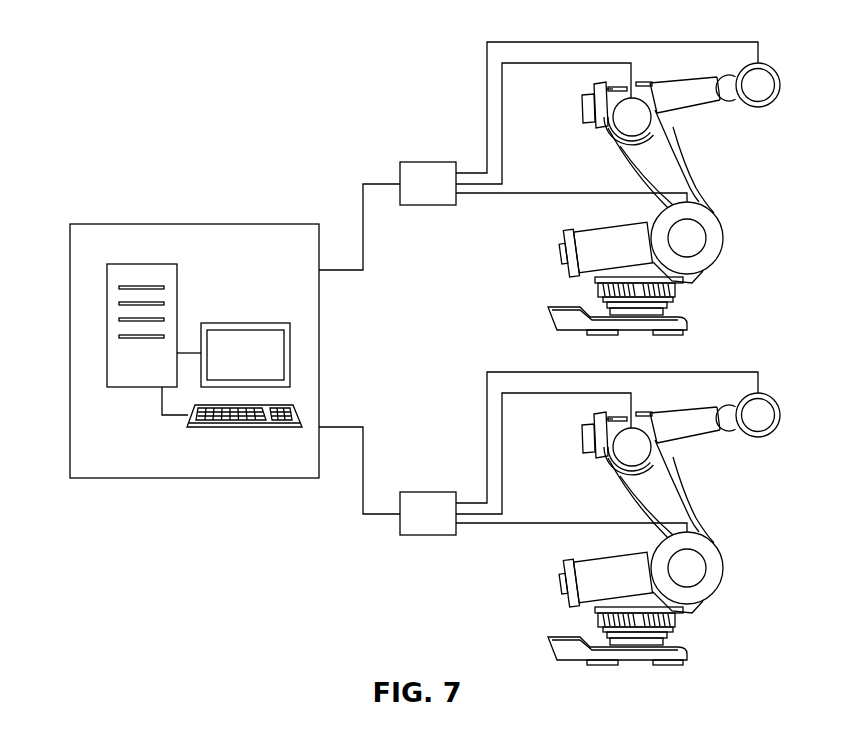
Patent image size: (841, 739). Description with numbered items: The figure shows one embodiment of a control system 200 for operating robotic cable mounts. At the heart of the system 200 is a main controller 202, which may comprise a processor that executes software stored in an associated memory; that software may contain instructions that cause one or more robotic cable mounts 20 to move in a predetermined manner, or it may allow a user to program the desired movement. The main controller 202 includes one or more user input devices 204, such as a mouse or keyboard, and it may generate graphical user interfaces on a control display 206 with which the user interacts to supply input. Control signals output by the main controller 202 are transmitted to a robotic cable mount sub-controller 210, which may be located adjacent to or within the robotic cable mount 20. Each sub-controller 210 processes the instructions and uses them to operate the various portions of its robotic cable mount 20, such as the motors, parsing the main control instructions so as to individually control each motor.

The system 200 is at (257, 583).
The main controller 202 is at (200, 260).
The user input device 204 is at (258, 427).
The control display 206 is at (243, 323).
The robotic cable mount sub-controller 210 is at (422, 162).
The robotic cable mount 20 is at (748, 250).